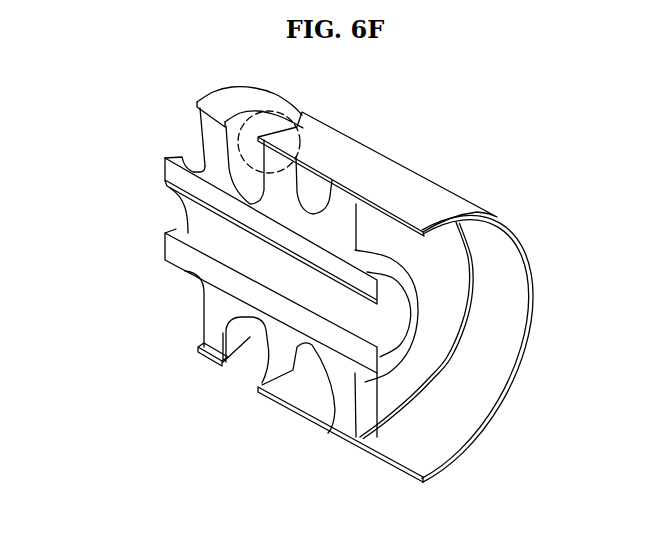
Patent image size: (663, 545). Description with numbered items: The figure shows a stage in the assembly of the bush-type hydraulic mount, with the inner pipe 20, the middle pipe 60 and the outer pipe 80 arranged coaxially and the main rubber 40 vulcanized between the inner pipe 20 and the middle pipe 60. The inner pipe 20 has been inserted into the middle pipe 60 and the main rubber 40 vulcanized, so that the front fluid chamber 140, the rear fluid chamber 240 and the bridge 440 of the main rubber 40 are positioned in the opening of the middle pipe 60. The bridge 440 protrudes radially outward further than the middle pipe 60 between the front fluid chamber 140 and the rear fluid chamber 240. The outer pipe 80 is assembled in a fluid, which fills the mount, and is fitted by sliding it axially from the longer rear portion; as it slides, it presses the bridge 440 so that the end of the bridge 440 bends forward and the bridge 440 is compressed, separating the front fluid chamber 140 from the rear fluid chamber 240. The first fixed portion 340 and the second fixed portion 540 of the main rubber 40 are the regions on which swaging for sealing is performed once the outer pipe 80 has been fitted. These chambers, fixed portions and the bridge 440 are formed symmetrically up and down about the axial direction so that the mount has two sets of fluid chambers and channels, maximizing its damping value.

The inner pipe 20 is at (170, 177).
The main rubber 40 is at (208, 172).
The middle pipe 60 is at (473, 270).
The outer pipe 80 is at (440, 197).
The front fluid chamber 140 is at (247, 340).
The rear fluid chamber 240 is at (318, 187).
The first fixed portion 340 is at (213, 333).
The bridge 440 is at (276, 384).
The second fixed portion 540 is at (342, 417).